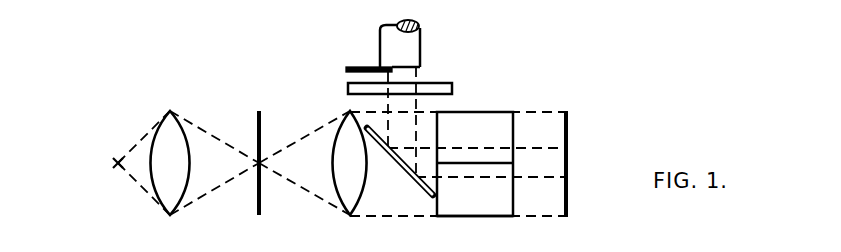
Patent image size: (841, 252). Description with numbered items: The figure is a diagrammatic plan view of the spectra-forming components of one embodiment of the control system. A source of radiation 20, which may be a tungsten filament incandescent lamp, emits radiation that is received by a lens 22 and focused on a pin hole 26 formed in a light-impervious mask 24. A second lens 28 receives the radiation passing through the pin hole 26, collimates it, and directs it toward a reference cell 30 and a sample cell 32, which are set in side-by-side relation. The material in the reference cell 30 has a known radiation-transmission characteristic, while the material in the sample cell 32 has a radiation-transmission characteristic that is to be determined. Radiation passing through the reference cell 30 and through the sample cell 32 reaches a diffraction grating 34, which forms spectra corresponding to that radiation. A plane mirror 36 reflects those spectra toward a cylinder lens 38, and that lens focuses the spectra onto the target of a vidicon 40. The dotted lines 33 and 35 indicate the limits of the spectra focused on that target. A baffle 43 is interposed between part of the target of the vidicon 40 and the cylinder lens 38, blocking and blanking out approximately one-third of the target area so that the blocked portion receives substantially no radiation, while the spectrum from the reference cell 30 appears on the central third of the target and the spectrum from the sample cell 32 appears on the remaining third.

The source of radiation 20 is at (115, 167).
The lens 22 is at (166, 211).
The light-impervious mask 24 is at (261, 216).
The pin hole 26 is at (256, 168).
The lens 28 is at (347, 210).
The reference cell 30 is at (497, 115).
The sample cell 32 is at (485, 207).
The dotted line 33 is at (542, 148).
The diffraction grating 34 is at (568, 138).
The dotted line 35 is at (532, 177).
The plane mirror 36 is at (402, 171).
The cylinder lens 38 is at (453, 90).
The vidicon 40 is at (412, 45).
The baffle 43 is at (354, 66).